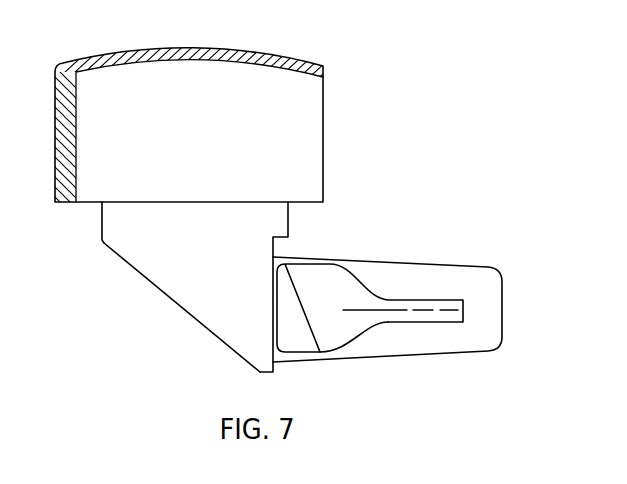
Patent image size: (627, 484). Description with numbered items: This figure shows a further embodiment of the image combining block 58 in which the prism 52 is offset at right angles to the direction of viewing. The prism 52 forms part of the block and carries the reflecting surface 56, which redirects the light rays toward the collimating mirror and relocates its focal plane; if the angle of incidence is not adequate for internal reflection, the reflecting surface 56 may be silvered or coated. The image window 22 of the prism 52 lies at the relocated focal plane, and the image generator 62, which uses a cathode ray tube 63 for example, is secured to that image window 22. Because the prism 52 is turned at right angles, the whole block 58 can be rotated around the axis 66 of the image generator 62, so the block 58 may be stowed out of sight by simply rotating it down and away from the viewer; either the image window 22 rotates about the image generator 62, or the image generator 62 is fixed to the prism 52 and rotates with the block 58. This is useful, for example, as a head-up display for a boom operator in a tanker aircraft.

The image combining block 58 is at (268, 50).
The prism 52 is at (158, 260).
The reflecting surface 56 is at (197, 319).
The image generator 62 is at (473, 268).
The image window 22 is at (275, 330).
The cathode ray tube 63 is at (365, 326).
The axis 66 is at (463, 310).